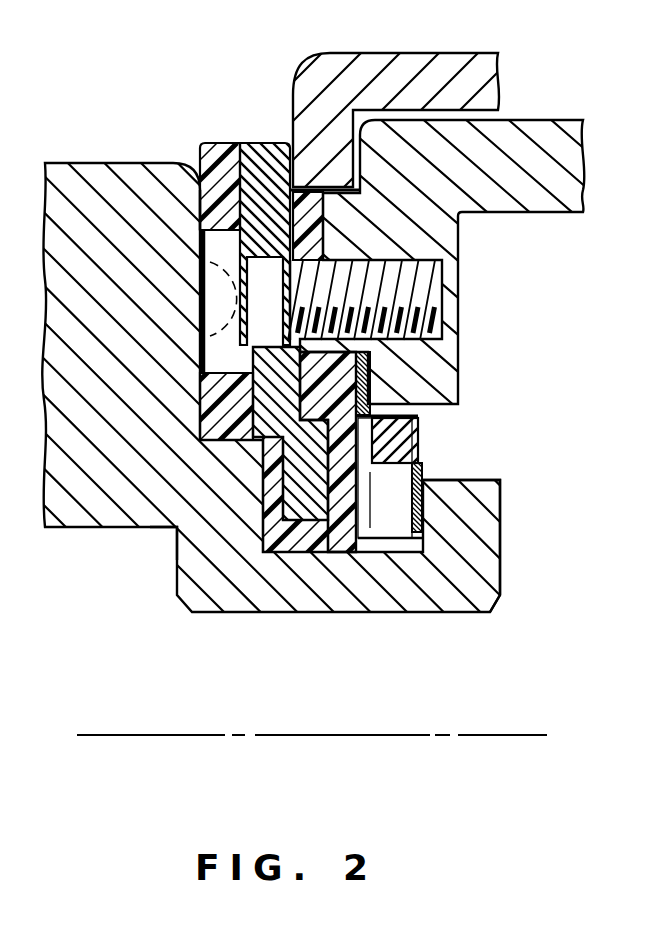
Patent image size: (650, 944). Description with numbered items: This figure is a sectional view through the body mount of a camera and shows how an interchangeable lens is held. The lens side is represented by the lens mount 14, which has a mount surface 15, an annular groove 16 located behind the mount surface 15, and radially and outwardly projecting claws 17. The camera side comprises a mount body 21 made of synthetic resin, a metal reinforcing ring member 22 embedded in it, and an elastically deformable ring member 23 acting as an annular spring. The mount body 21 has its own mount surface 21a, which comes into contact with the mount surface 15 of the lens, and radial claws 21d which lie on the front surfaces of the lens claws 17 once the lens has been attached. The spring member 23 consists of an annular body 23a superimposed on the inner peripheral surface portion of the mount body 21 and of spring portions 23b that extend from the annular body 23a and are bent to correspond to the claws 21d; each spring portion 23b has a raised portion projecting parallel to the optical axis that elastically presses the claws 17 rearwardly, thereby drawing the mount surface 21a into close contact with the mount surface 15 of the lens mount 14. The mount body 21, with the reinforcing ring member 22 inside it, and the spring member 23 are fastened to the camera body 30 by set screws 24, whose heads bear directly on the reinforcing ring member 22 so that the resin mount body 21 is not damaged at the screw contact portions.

The lens mount 14 is at (452, 590).
The mount surface 15 is at (167, 526).
The annular groove 16 is at (388, 547).
The claws 17 is at (498, 513).
The mount body 21 is at (203, 148).
The mount surface 21a is at (197, 207).
The radial claws 21d is at (331, 548).
The reinforcing ring member 22 is at (262, 163).
The elastically deformable ring member 23 is at (403, 477).
The annular body 23a is at (370, 382).
The spring portions 23b is at (427, 468).
The set screws 24 is at (437, 285).
The camera body 30 is at (558, 143).